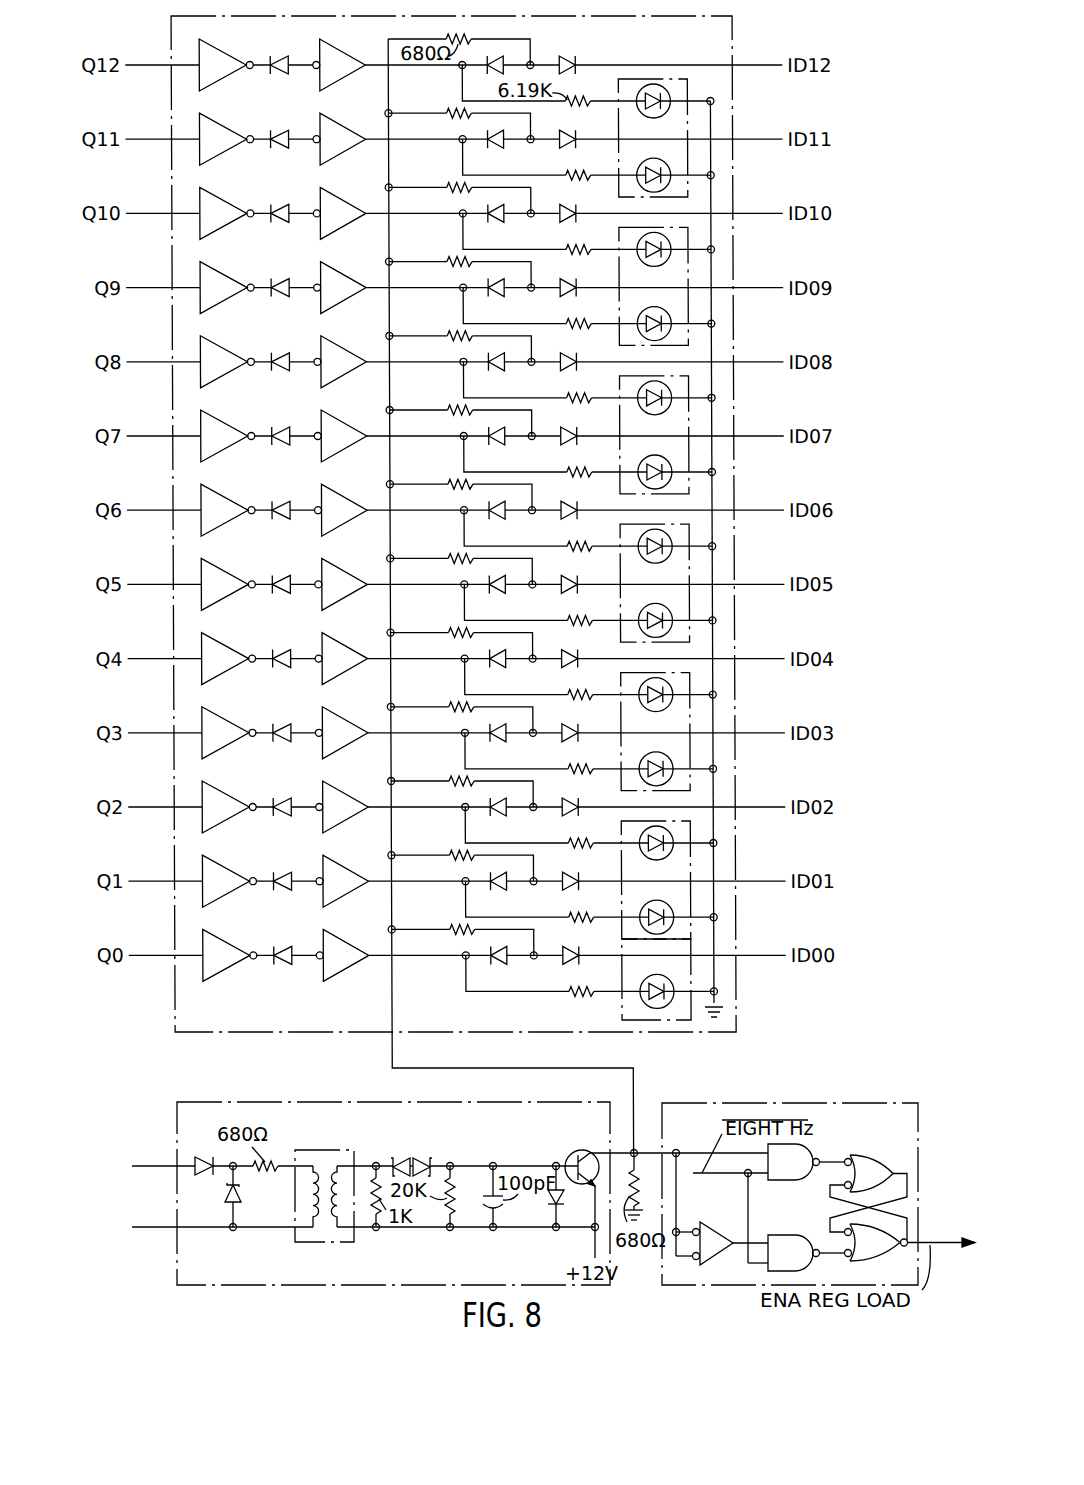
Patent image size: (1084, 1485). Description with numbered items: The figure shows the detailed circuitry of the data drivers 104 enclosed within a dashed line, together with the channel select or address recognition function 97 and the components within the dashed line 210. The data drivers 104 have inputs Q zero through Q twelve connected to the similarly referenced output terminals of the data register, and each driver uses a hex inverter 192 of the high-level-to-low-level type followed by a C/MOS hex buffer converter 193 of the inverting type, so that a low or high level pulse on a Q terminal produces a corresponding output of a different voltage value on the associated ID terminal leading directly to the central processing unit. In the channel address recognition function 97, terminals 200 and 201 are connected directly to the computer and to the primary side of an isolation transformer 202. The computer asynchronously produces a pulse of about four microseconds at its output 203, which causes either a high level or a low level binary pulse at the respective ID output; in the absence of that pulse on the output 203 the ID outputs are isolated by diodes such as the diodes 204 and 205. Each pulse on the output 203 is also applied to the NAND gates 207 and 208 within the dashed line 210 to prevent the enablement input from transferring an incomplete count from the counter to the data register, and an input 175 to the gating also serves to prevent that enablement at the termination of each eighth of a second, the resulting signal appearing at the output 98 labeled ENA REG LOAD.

The hex inverter 192 is at (230, 44).
The C/MOS hex buffer converter 193 is at (349, 45).
The diode 204 is at (506, 146).
The diode 205 is at (572, 147).
The data drivers 104 is at (236, 1033).
The channel select or address recognition function 97 is at (228, 1102).
The terminal 200 is at (150, 1166).
The terminal 201 is at (152, 1227).
The isolation transformer 202 is at (338, 1150).
The function block 210 is at (710, 1103).
The output 203 is at (665, 1152).
The eight Hz signal line 175 is at (736, 1177).
The NAND gate 207 is at (723, 1232).
The NAND gate 208 is at (806, 1150).
The ENA REG LOAD output 98 is at (951, 1242).